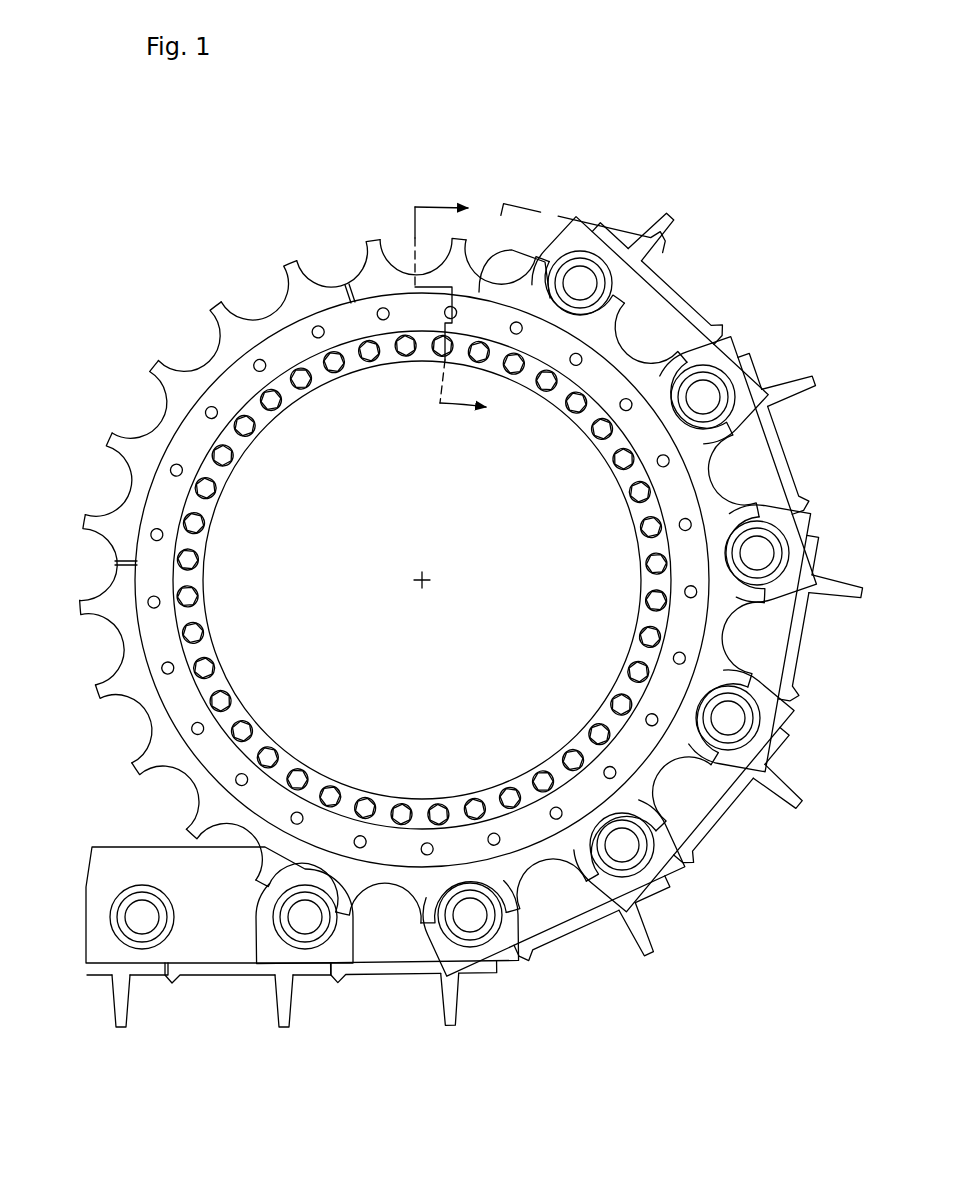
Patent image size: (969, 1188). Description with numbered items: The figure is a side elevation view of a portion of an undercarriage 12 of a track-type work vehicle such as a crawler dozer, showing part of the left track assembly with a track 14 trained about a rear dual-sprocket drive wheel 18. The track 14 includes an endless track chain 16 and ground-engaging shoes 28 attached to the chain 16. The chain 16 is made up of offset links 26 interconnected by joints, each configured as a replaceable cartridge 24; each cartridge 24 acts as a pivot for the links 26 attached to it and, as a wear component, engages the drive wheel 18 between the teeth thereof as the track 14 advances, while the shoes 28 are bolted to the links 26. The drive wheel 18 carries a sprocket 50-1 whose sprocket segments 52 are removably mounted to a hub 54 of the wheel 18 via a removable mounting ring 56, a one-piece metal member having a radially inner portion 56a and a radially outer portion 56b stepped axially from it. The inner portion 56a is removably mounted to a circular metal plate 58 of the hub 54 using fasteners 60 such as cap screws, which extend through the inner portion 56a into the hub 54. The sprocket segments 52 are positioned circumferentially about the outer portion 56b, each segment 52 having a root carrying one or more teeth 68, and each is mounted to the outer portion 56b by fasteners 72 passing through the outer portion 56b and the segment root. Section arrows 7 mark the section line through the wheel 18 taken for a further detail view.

The undercarriage 12 is at (151, 172).
The track 14 is at (720, 204).
The endless track chain 16 is at (527, 231).
The rear dual-sprocket drive wheel 18 is at (381, 557).
The cartridge 24 is at (629, 243).
The offset link 26 is at (750, 458).
The ground-engaging shoe 28 is at (714, 325).
The sprocket 50-1 is at (329, 258).
The sprocket segment 52 is at (347, 305).
The hub 54 is at (472, 580).
The removable mounting ring 56 is at (303, 574).
The radially inner portion 56a is at (196, 576).
The radially outer portion 56b is at (192, 637).
The circular metal plate 58 is at (444, 686).
The fastener 60 is at (242, 432).
The tooth 68 is at (293, 266).
The fastener 72 is at (152, 530).
The section line 7- 7 is at (461, 316).